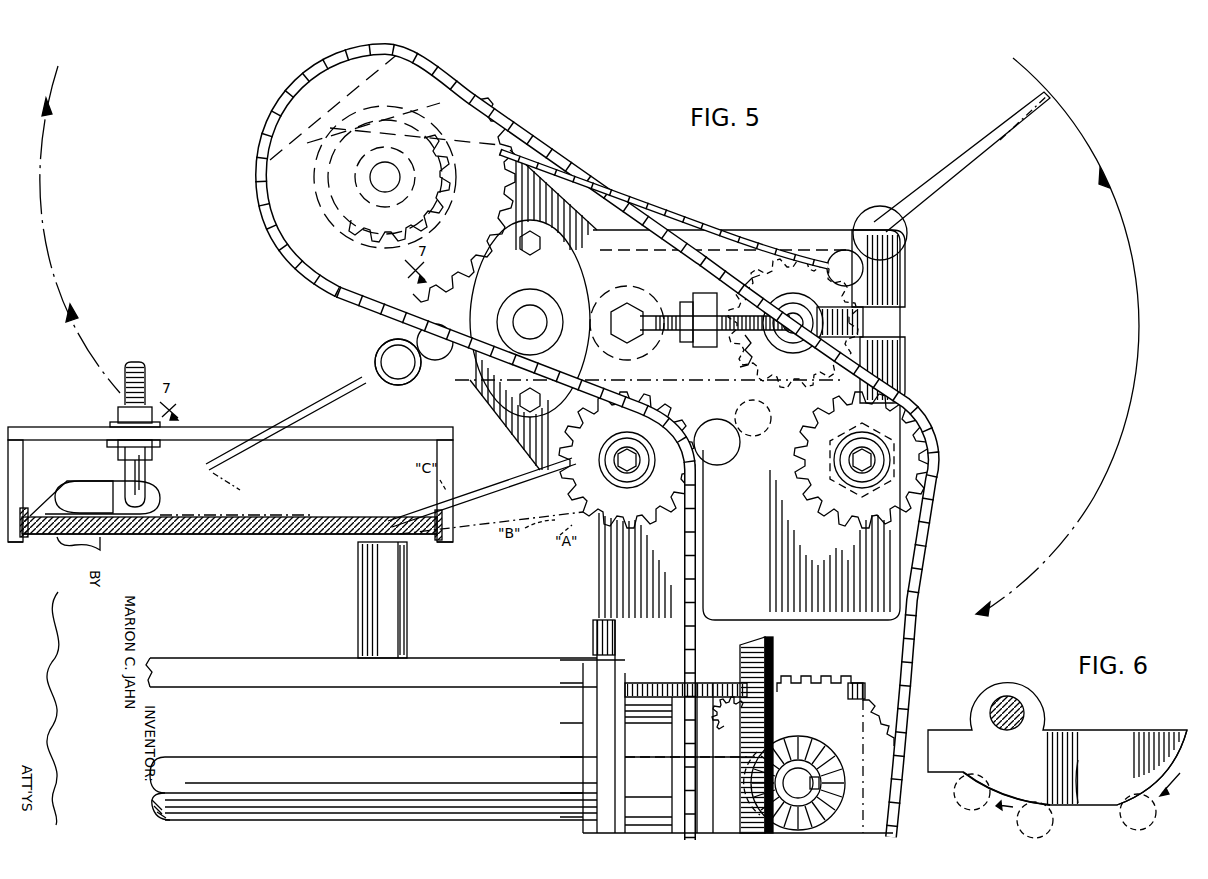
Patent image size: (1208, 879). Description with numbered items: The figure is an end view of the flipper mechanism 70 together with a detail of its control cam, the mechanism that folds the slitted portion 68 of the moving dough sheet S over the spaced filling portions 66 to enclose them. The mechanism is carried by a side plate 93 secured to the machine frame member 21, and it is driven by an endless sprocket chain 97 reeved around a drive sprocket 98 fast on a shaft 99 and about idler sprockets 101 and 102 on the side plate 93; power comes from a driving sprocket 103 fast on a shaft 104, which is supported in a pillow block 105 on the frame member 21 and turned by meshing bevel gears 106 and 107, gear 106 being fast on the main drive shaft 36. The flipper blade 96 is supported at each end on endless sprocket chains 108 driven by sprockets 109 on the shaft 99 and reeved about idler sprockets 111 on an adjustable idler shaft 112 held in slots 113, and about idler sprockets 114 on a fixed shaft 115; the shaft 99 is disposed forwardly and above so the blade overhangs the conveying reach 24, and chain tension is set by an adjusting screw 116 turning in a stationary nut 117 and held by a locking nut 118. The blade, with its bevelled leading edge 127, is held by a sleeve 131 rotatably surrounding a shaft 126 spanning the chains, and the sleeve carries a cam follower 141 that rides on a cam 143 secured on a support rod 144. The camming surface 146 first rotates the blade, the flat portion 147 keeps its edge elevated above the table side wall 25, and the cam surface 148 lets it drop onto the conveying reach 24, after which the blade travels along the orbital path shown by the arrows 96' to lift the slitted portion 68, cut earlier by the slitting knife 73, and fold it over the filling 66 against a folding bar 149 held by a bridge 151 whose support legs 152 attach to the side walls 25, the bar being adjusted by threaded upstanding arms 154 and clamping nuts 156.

In FIG. 5, the flipper mechanism 70 is at (172, 136).
In FIG. 5, the drive sprocket 98 is at (498, 120).
In FIG. 5, the shaft 99 is at (390, 170).
In FIG. 5, the sprockets 109 is at (446, 212).
In FIG. 5, the endless sprocket chain 97 is at (282, 276).
In FIG. 5, the endless sprocket chains 108 is at (684, 215).
In FIG. 5, the idler sprockets 111 is at (768, 255).
In FIG. 5, the cam follower 141 is at (846, 250).
In FIG. 6, the cam follower 141 is at (965, 806).
In FIG. 5, the sleeve 131 is at (880, 208).
In FIG. 5, the flipper blade 96 is at (357, 438).
In FIG. 5, the orbital path arrows 96' is at (601, 337).
In FIG. 5, the idler sprockets 114 is at (612, 300).
In FIG. 5, the cam 143 is at (650, 300).
In FIG. 6, the cam 143 is at (1108, 738).
In FIG. 5, the stationary nut 117 is at (700, 298).
In FIG. 5, the fixed position shaft 115 is at (530, 318).
In FIG. 5, the adjustable idler shaft 112 is at (893, 318).
In FIG. 5, the slots 113 is at (887, 332).
In FIG. 5, the locking nut 118 is at (688, 344).
In FIG. 5, the adjusting screw 116 is at (738, 345).
In FIG. 5, the threaded upstanding arms 154 is at (140, 362).
In FIG. 5, the clamping nuts 156 is at (148, 405).
In FIG. 5, the bridge or frame 151 is at (48, 426).
In FIG. 5, the support legs 152 is at (22, 492).
In FIG. 5, the slitted portion 68 is at (65, 480).
In FIG. 5, the filling portions 66 is at (80, 493).
In FIG. 5, the folding bar 149 is at (147, 496).
In FIG. 5, the bevelled leading edge 127 is at (385, 500).
In FIG. 5, the shaft 126 is at (404, 372).
In FIG. 5, the conveying reach 24 is at (342, 517).
In FIG. 5, the side walls 25 is at (16, 543).
In FIG. 5, the slitting knife 73 is at (268, 535).
In FIG. 5, the frame members 21 is at (404, 606).
In FIG. 5, the main drive shaft 36 is at (372, 757).
In FIG. 5, the idler sprocket 102 is at (665, 485).
In FIG. 5, the side plate 93 is at (777, 573).
In FIG. 5, the idler sprocket 101 is at (918, 458).
In FIG. 5, the bevelled gear 106 is at (768, 644).
In FIG. 5, the pillow block 105 is at (863, 684).
In FIG. 5, the driving sprocket 103 is at (895, 730).
In FIG. 5, the shaft 104 is at (806, 768).
In FIG. 5, the bevelled gear 107 is at (846, 779).
In FIG. 5, the dough sheet S is at (332, 496).
In FIG. 6, the support rod 144 is at (1015, 700).
In FIG. 6, the cam surface 148 is at (1010, 778).
In FIG. 6, the flat horizontal portion 147 is at (1094, 775).
In FIG. 6, the camming surface 146 is at (1150, 780).